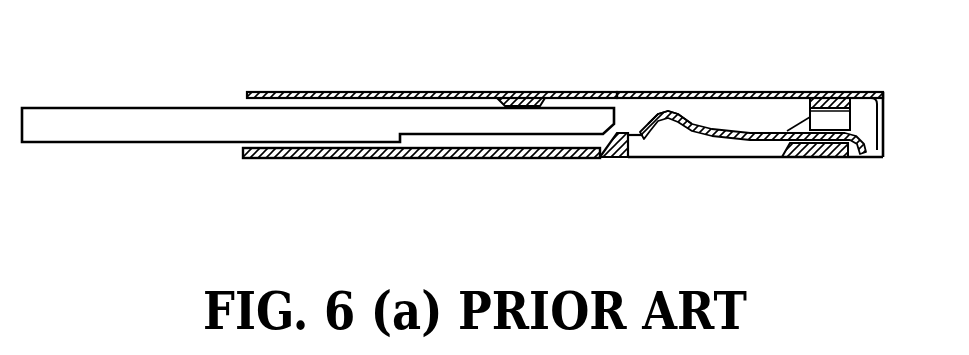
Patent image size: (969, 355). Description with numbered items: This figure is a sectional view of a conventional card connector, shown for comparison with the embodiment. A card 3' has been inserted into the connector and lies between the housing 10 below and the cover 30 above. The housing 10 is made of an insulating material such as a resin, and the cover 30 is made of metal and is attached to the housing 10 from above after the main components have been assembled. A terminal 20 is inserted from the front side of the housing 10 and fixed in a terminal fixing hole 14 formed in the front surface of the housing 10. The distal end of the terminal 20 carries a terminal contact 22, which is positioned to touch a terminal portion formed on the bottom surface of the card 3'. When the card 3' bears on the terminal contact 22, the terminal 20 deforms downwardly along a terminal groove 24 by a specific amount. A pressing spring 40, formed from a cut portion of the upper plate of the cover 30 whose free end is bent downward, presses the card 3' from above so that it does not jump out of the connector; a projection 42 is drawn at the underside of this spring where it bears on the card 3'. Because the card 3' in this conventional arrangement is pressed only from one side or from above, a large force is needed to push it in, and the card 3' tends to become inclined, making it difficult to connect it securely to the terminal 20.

The card 3' is at (318, 153).
The housing 10 is at (823, 157).
The terminal fixing hole 14 is at (843, 122).
The terminal 20 is at (765, 143).
The terminal contact 22 is at (655, 118).
The terminal groove 24 is at (662, 152).
The cover 30 is at (765, 92).
The pressing spring 40 is at (340, 92).
The projection 42 is at (520, 97).